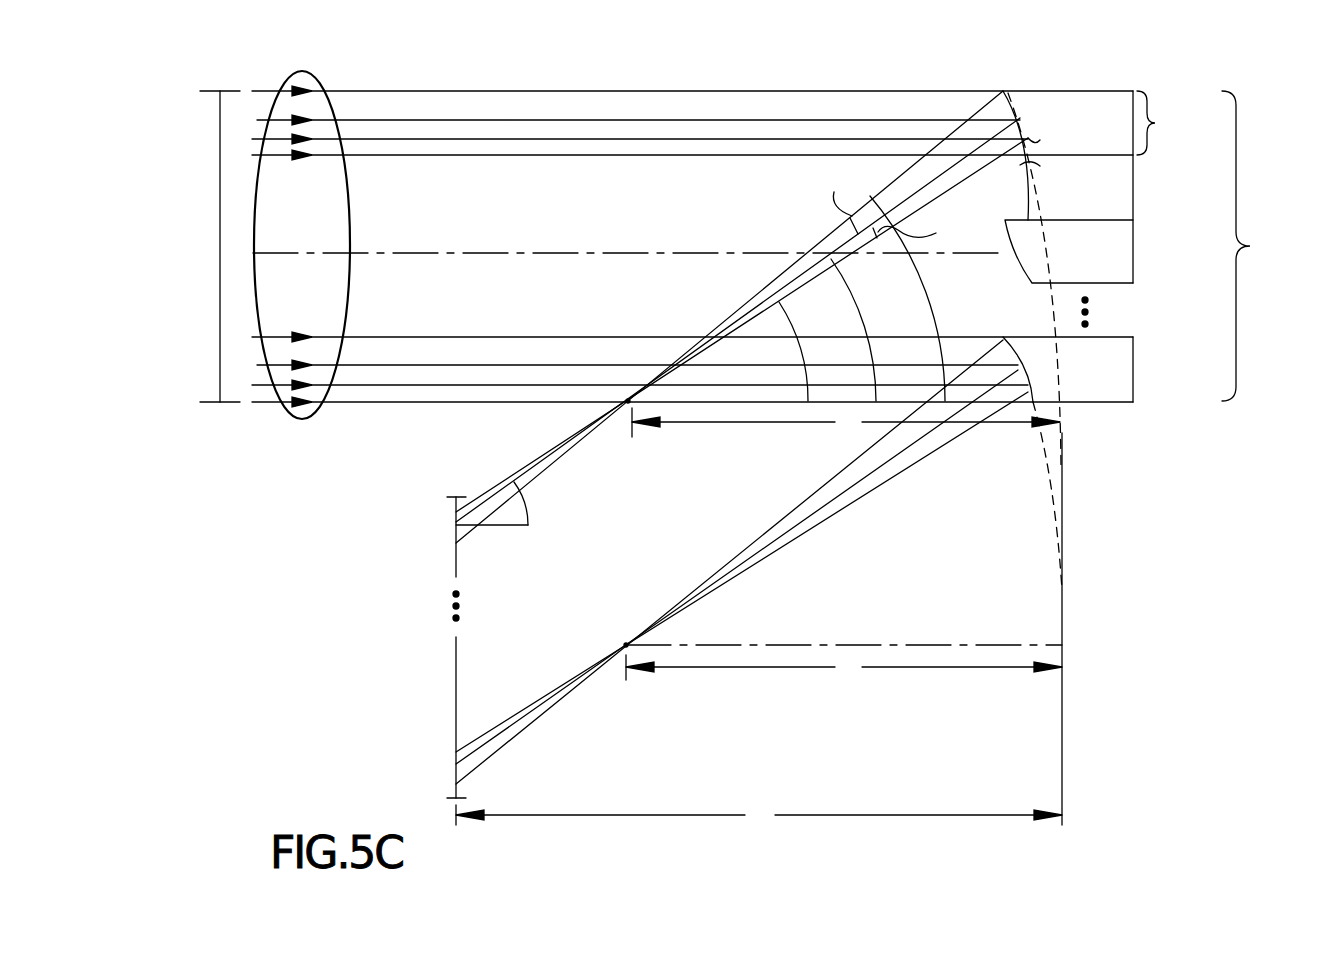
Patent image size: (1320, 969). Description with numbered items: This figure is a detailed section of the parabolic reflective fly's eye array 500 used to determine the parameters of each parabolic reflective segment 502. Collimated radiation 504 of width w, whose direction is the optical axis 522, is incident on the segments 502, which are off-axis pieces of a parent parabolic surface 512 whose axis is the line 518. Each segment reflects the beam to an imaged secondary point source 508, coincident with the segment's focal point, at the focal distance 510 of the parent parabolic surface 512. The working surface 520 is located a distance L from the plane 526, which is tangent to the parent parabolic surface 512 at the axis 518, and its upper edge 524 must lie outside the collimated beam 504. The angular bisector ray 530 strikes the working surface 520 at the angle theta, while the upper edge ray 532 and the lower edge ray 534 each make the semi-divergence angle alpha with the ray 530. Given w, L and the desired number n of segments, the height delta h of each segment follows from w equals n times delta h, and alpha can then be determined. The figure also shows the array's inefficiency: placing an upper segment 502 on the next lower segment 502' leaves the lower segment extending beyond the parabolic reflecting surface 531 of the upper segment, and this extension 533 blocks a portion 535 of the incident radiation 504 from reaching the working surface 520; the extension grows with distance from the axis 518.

The parabolic reflective fly's eye array 500 is at (1240, 64).
The parabolic reflective segment 502 is at (661, 205).
The next lower parabolic segment 502' is at (1109, 241).
The collimated radiation 504 is at (291, 80).
The imaged secondary point source 508 is at (622, 404).
The focal distance f 510 is at (682, 425).
The parent parabolic surface 512 is at (1057, 293).
The axis of the parent parabolic surface 518 is at (738, 403).
The working surface 520 is at (455, 568).
The optical axis 522 is at (387, 253).
The upper edge of the working surface 524 is at (455, 496).
The plane 526 is at (1063, 517).
The angular bisector ray 530 is at (835, 245).
The parabolic reflecting surface 531 is at (1005, 92).
The upper edge ray 532 is at (867, 198).
The extension 533 is at (1035, 168).
The lower edge ray 534 is at (957, 183).
The blocked portion of the incident radiation 535 is at (1034, 140).